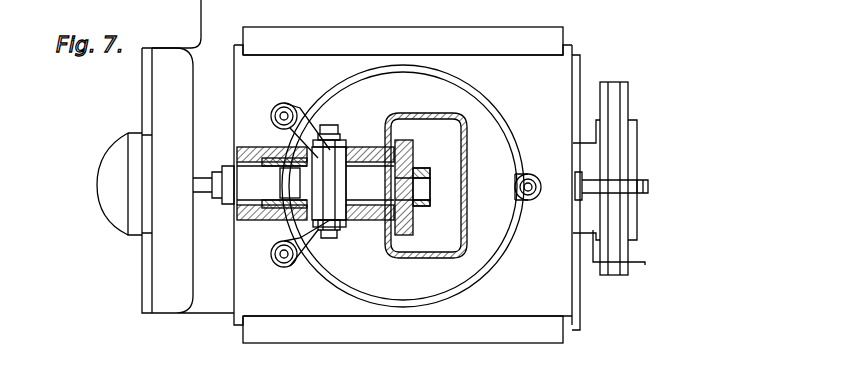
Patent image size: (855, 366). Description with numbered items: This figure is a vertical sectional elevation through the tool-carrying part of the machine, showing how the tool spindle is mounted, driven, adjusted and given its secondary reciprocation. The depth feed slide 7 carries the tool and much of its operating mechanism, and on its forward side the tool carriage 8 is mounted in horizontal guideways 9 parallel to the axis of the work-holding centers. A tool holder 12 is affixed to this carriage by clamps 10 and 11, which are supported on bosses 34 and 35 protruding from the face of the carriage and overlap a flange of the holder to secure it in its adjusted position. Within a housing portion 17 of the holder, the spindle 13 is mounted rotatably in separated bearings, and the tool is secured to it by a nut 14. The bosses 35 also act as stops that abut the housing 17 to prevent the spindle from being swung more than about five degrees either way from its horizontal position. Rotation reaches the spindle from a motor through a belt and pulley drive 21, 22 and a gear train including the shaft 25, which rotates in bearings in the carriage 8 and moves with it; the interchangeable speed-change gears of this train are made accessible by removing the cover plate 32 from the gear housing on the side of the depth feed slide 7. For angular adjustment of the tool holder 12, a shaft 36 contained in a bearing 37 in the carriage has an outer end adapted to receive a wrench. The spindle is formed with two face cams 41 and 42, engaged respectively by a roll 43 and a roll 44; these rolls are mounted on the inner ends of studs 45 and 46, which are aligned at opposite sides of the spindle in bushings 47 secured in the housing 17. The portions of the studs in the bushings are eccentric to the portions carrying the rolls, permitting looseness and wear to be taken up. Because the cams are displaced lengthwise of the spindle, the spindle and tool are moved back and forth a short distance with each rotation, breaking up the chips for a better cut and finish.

The depth feed slide 7 is at (212, 296).
The tool carriage 8 is at (155, 185).
The horizontal guideways 9 is at (316, 13).
The clamp 10 is at (403, 13).
The clamp 11 is at (310, 108).
The tool holder 12 is at (490, 124).
The spindle 13 is at (416, 204).
The nut 14 is at (416, 172).
The housing portion 17 is at (250, 150).
The belt and pulley drive 21 is at (623, 84).
The belt and pulley drive 22 is at (632, 132).
The shaft 25 is at (210, 195).
The cover plate 32 is at (143, 256).
The boss 34 is at (535, 174).
The bosses 35 is at (272, 108).
The shaft 36 is at (650, 180).
The bearing 37 is at (278, 160).
The face cam 41 is at (318, 182).
The face cam 42 is at (370, 183).
The roll 43 is at (300, 176).
The roll 44 is at (352, 190).
The stud 45 is at (332, 135).
The stud 46 is at (331, 230).
The bushings 47 is at (354, 150).